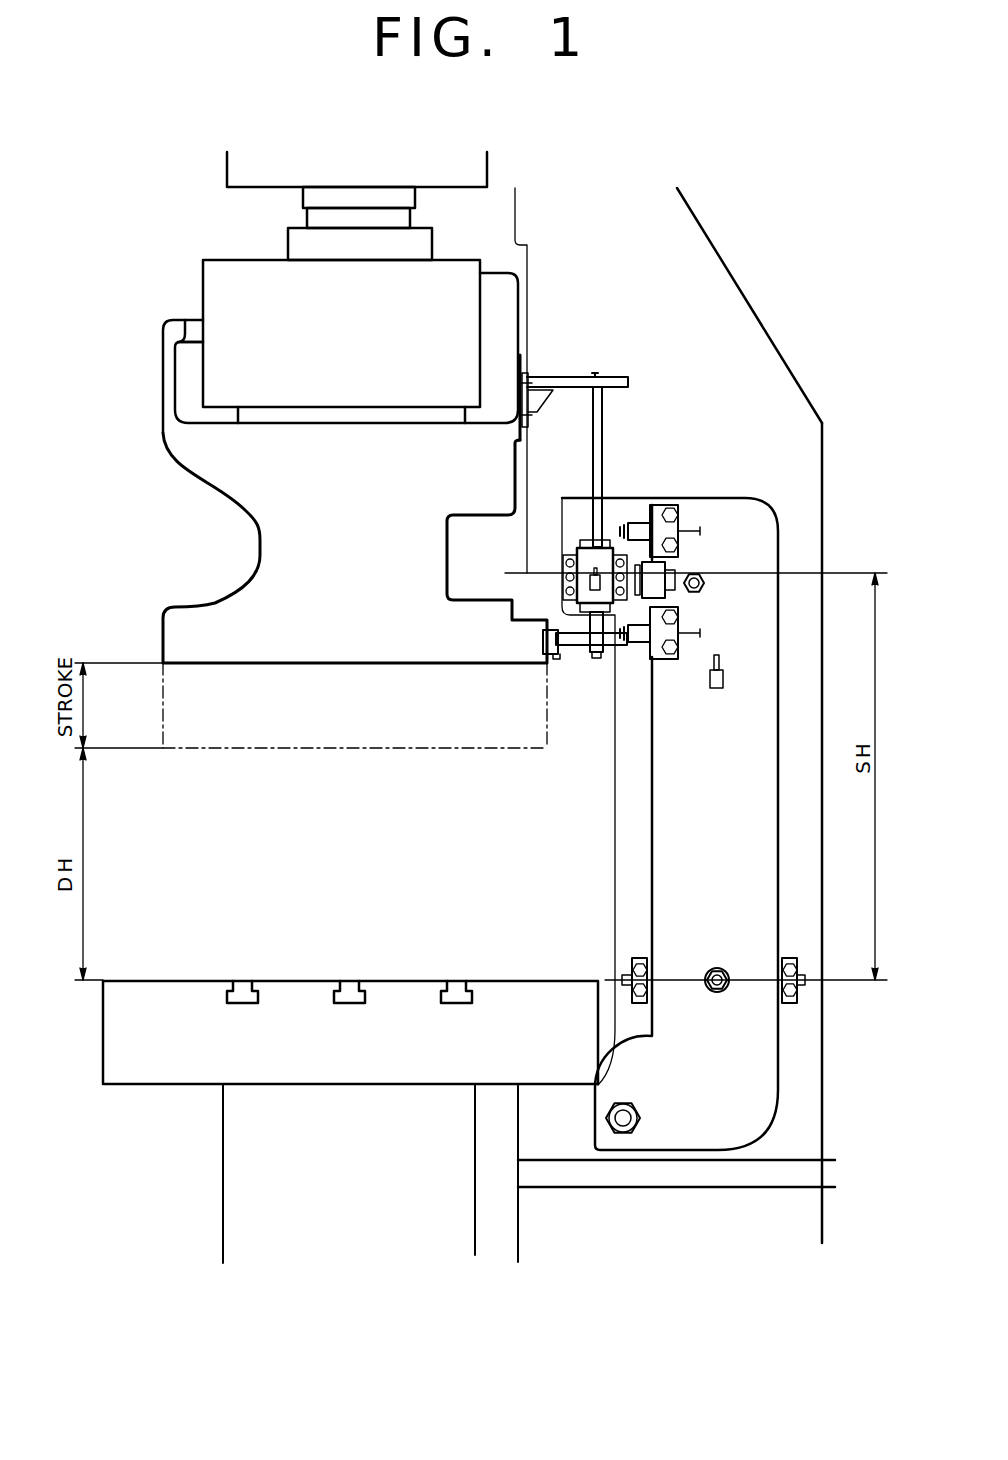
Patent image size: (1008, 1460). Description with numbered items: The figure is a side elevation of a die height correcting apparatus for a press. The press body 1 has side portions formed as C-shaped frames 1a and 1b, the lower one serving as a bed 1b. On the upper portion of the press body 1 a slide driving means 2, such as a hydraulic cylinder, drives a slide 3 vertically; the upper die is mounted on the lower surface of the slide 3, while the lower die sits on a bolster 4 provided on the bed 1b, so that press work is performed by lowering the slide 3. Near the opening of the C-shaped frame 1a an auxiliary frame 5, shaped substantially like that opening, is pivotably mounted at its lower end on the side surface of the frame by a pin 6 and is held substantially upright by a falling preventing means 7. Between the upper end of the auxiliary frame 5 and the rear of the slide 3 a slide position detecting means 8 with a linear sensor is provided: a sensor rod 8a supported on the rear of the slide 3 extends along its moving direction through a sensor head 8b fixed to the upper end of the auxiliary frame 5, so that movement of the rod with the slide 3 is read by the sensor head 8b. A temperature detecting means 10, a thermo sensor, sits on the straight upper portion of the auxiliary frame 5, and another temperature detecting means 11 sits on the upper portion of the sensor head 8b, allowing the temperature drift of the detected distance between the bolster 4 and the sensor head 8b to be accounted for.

The press body 1 is at (763, 313).
The C-shaped frame 1a is at (790, 442).
The bed 1b is at (252, 1110).
The slide driving means 2 is at (230, 168).
The slide 3 is at (188, 648).
The bolster 4 is at (183, 995).
The auxiliary frame 5 is at (765, 817).
The pin 6 is at (640, 1118).
The falling preventing means 7 is at (722, 968).
The slide position detecting means 8 is at (535, 499).
The sensor rod 8a is at (580, 523).
The sensor head 8b is at (563, 578).
The temperature detecting means 10 is at (724, 672).
The temperature detecting means 11 is at (585, 640).